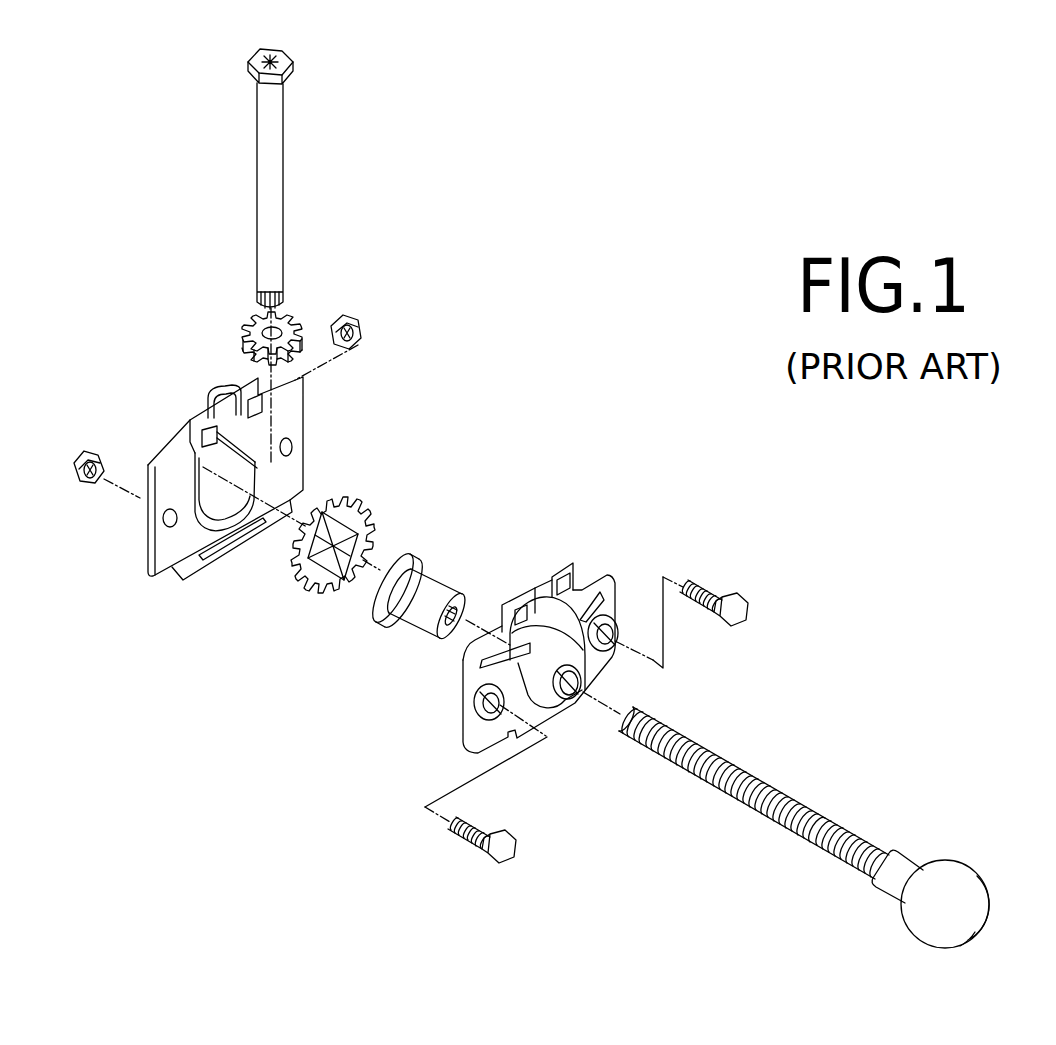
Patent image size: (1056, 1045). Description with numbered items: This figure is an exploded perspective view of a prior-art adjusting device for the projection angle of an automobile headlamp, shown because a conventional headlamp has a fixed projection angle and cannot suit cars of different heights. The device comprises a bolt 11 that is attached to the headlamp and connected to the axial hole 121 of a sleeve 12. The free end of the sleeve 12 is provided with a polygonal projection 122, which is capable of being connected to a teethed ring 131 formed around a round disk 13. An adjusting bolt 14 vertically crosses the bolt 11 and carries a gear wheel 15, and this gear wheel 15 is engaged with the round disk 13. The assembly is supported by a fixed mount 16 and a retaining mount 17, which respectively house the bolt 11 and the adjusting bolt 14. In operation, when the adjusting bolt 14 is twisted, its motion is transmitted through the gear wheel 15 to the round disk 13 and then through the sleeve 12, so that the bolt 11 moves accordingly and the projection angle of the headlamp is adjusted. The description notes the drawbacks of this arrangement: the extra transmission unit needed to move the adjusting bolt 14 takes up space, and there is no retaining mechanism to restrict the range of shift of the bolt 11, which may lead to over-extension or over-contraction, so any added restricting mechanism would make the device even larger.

The bolt 11 is at (805, 806).
The sleeve 12 is at (420, 574).
The axial hole 121 is at (437, 637).
The polygonal projection 122 is at (412, 570).
The round disk 13 is at (326, 542).
The teethed ring 131 is at (325, 555).
The adjusting bolt 14 is at (270, 181).
The gear wheel 15 is at (292, 322).
The fixed mount 16 is at (180, 437).
The retaining mount 17 is at (597, 573).